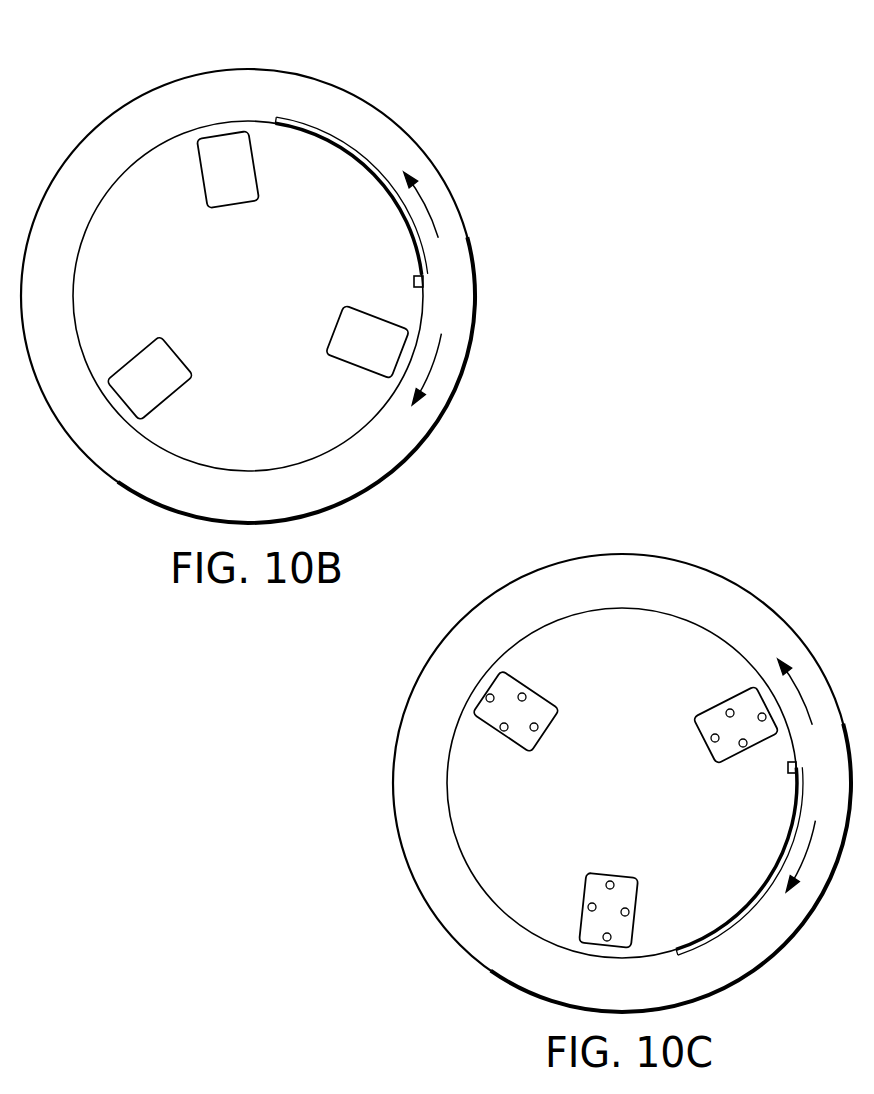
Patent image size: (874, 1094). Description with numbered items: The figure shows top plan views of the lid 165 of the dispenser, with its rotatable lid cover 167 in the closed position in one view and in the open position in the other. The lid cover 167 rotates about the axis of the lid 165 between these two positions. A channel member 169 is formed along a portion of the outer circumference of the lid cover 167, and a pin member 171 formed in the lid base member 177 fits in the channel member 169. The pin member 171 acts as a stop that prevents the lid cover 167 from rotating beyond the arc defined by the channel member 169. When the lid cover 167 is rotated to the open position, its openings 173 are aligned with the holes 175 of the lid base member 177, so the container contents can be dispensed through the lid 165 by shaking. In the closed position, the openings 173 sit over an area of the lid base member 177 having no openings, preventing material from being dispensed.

In FIG. 10B, the lid 165 is at (400, 130).
In FIG. 10C, the lid 165 is at (672, 559).
In FIG. 10B, the rotatable lid cover 167 is at (330, 268).
In FIG. 10C, the rotatable lid cover 167 is at (652, 685).
In FIG. 10B, the channel member 169 is at (302, 132).
In FIG. 10B, the pin member 171 is at (422, 278).
In FIG. 10C, the openings 173 is at (543, 728).
In FIG. 10C, the holes 175 is at (728, 709).
In FIG. 10B, the lid base member 177 is at (479, 312).